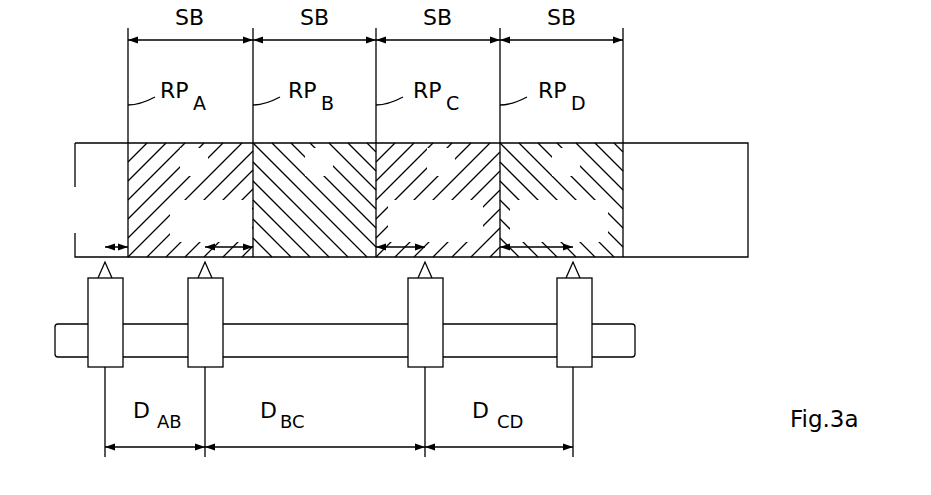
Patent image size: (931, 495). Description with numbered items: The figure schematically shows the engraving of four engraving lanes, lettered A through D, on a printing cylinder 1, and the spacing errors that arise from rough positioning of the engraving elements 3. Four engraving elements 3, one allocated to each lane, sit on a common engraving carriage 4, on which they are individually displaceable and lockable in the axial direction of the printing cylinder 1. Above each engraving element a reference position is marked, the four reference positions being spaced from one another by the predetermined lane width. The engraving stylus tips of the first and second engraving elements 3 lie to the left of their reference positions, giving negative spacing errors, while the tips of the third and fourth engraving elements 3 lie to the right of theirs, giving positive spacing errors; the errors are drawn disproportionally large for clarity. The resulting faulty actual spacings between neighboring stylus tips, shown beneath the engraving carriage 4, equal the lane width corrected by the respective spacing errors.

The printing cylinder 1 is at (114, 162).
The engraving elements 3 is at (340, 314).
The engraving carriage 4 is at (326, 338).